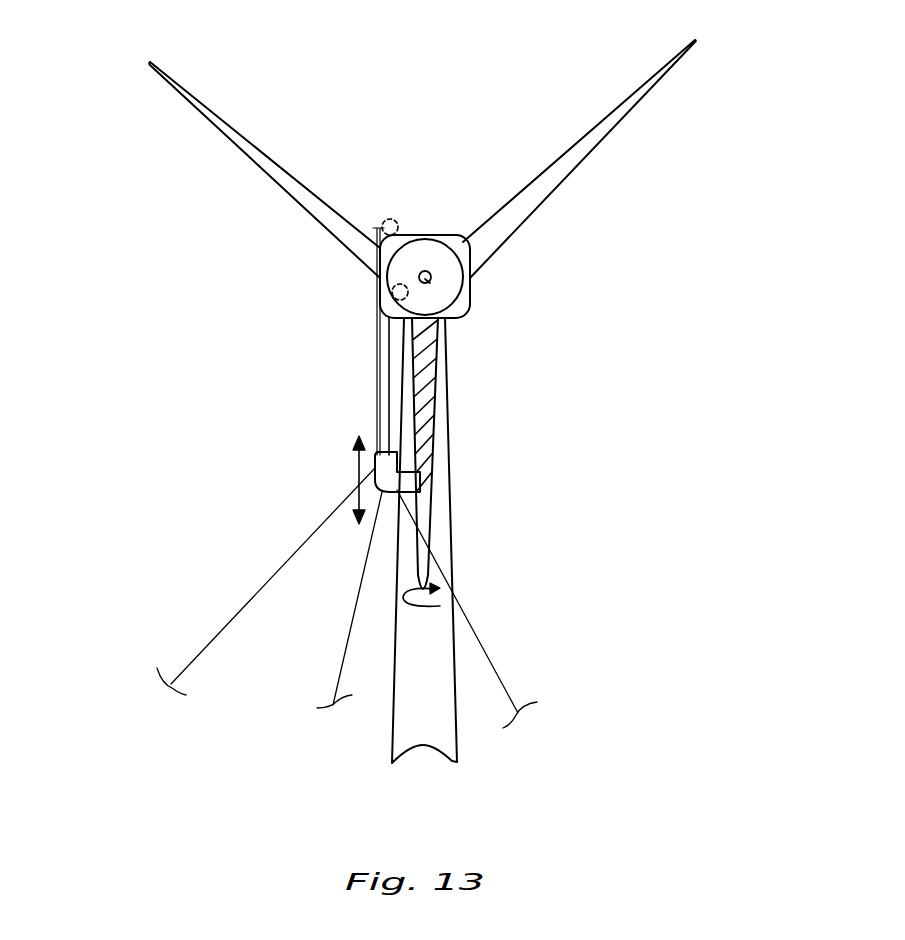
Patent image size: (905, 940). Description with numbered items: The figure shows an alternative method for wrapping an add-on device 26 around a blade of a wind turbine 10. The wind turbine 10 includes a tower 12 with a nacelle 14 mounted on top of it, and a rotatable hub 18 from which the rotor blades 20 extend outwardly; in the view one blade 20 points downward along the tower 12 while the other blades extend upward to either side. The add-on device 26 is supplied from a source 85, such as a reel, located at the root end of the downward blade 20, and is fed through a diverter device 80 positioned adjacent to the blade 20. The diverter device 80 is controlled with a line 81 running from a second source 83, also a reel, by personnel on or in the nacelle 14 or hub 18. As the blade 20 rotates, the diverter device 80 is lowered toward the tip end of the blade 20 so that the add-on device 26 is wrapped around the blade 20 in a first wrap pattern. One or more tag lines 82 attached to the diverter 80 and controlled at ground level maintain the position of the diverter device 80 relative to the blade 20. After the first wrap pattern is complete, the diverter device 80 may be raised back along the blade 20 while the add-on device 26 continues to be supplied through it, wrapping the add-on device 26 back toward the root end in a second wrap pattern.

The wind turbine 10 is at (478, 122).
The tower 12 is at (457, 738).
The nacelle 14 is at (448, 237).
The hub 18 is at (458, 298).
The rotor blade 20 is at (277, 183).
The add-on device 26 is at (570, 178).
The diverter device 80 is at (387, 472).
The line 81 is at (377, 353).
The tag lines 82 is at (242, 607).
The source 83 is at (386, 222).
The source 85 is at (392, 293).